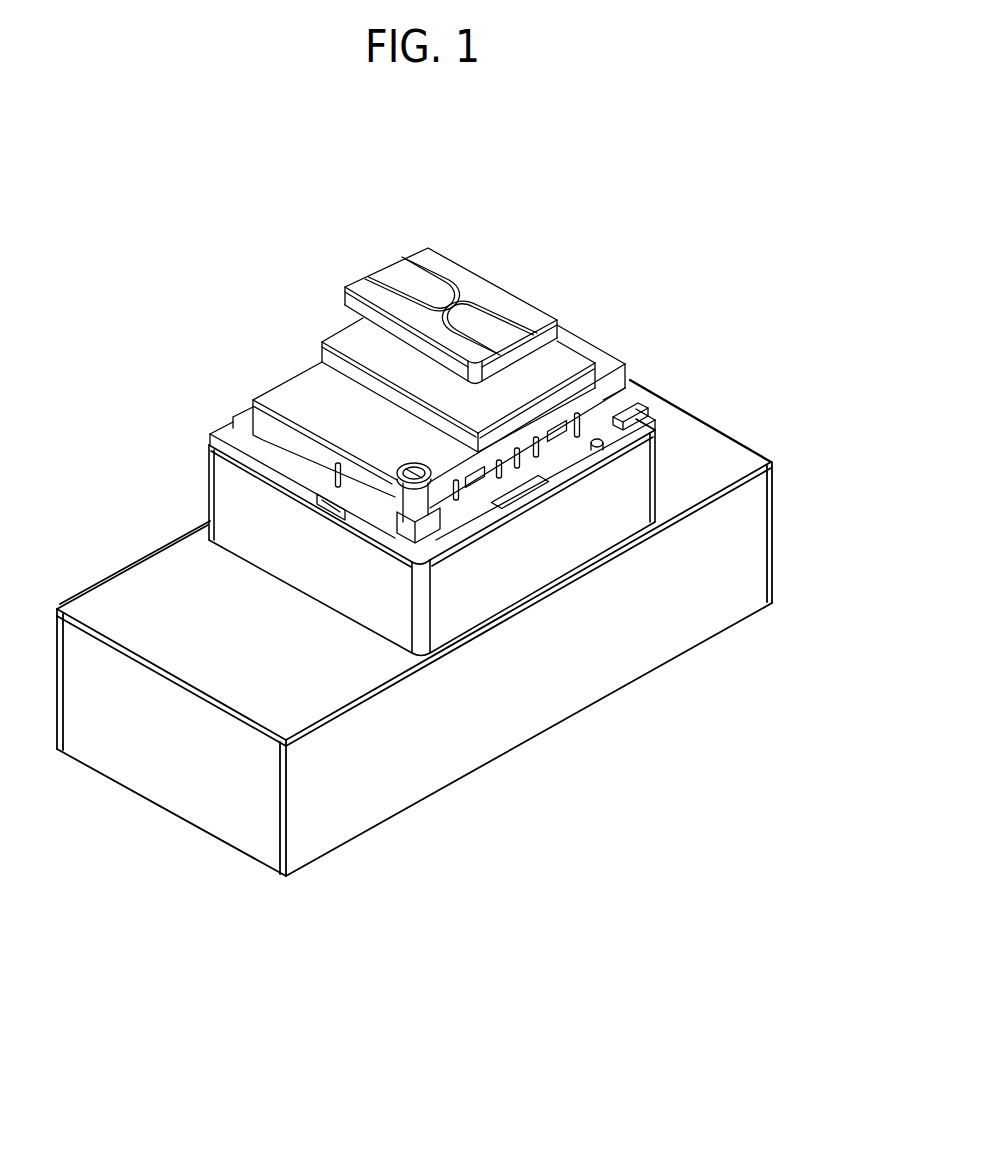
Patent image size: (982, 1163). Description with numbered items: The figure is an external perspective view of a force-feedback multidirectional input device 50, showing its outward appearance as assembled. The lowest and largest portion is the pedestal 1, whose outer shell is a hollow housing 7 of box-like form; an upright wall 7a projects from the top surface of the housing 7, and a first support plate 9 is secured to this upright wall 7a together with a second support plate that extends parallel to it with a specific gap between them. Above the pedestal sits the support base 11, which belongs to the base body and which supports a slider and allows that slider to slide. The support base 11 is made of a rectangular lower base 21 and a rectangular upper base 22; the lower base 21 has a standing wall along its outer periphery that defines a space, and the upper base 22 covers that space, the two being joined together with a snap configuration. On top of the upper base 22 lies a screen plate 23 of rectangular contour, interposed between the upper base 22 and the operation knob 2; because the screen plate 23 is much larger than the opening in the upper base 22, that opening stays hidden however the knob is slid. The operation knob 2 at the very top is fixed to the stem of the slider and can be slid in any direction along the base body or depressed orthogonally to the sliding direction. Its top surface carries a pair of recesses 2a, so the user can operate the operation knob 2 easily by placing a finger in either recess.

The pedestal 1 is at (459, 538).
The operation knob 2 is at (455, 270).
The recesses 2a is at (400, 283).
The housing 7 is at (778, 528).
The upright wall 7a is at (235, 497).
The first support plate 9 is at (645, 428).
The support base 11 is at (156, 258).
The lower base 21 is at (258, 440).
The upper base 22 is at (285, 392).
The screen plate 23 is at (568, 360).
The force-feedback multidirectional input device 50 is at (105, 382).